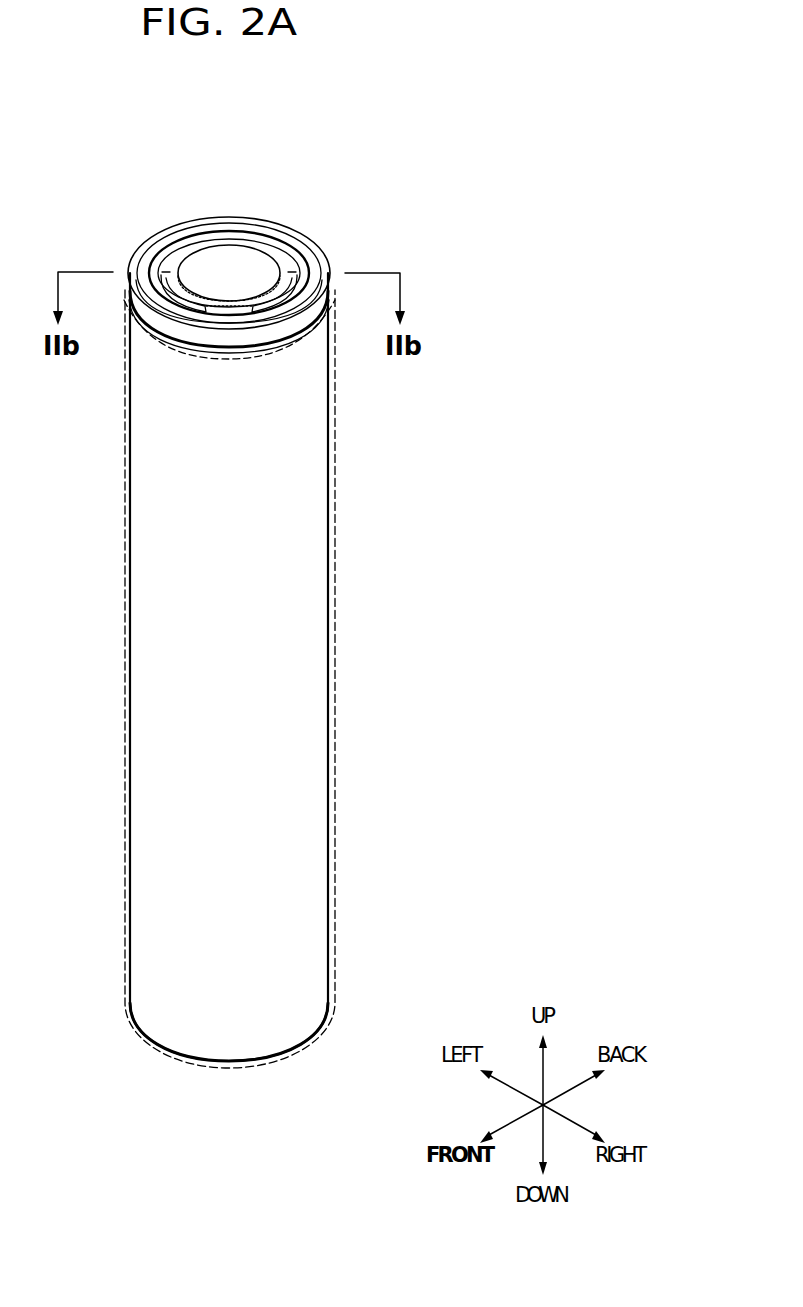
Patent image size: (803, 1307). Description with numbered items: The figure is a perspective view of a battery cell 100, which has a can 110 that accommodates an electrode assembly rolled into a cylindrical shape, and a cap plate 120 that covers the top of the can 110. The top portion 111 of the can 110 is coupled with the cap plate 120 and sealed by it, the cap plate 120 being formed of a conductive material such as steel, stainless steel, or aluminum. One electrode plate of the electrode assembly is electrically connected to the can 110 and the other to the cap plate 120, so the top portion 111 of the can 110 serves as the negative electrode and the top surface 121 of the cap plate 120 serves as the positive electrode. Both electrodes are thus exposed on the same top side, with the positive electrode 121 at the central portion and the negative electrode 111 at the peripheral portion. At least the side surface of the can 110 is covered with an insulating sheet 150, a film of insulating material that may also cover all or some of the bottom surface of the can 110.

The battery cell 100 is at (324, 607).
The can 110 is at (330, 537).
The top portion of the can 111 is at (136, 271).
The cap plate 120 is at (200, 267).
The top surface of the cap plate 121 is at (245, 258).
The insulating sheet 150 is at (335, 958).